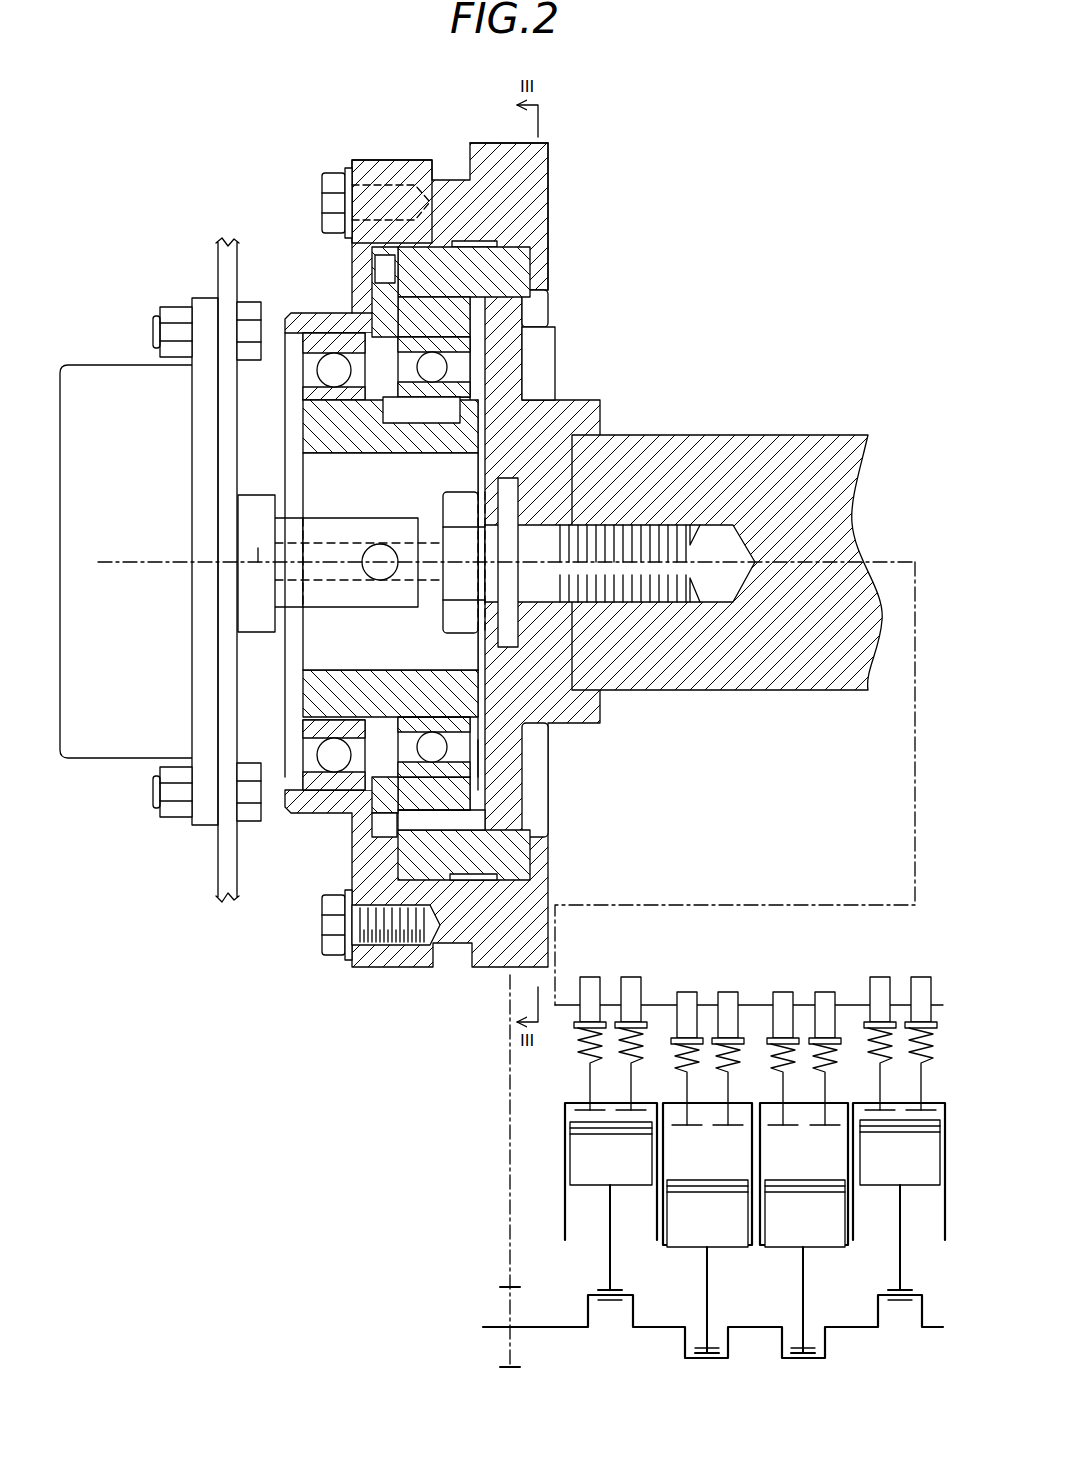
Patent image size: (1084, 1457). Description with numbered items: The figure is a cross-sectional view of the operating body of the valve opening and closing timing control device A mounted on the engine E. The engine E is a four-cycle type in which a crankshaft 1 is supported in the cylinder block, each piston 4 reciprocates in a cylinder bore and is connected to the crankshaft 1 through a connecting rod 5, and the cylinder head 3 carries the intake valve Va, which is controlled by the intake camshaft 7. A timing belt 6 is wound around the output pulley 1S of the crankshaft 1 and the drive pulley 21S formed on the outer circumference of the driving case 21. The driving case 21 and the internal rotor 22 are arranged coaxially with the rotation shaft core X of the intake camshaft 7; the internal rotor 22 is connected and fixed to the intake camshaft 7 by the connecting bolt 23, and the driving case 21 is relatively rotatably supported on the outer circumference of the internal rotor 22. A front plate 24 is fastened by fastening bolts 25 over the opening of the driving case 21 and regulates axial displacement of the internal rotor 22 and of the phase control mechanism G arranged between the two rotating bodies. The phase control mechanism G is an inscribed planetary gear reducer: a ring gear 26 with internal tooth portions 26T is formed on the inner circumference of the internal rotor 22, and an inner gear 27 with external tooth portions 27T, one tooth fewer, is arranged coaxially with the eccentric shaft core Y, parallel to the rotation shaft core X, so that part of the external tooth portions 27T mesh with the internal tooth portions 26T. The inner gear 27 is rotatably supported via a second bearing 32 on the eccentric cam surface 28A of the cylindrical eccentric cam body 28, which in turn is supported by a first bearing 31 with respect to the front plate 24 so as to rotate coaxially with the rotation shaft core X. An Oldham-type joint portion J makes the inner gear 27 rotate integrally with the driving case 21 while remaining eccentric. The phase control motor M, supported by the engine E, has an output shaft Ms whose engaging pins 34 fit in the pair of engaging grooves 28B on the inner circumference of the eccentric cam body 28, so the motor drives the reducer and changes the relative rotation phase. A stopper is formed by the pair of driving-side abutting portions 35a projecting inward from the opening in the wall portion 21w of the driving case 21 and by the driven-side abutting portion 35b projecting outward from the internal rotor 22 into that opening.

The crankshaft 1 is at (542, 1320).
The output pulley 1S is at (508, 1308).
The cylinder head 3 is at (677, 1100).
The piston 4 is at (567, 1160).
The connecting rod 5 is at (610, 1268).
The timing belt 6 is at (508, 1127).
The intake camshaft 7 is at (783, 435).
The driving case 21 is at (478, 531).
The drive pulley 21S is at (510, 143).
The wall portion 21w is at (548, 197).
The internal rotor 22 is at (478, 246).
The connecting bolt 23 is at (697, 583).
The front plate 24 is at (362, 158).
The fastening bolts 25 is at (320, 203).
The ring gear 26 is at (532, 563).
The internal tooth portions 26T is at (453, 828).
The inner gear 27 is at (493, 535).
The external tooth portions 27T is at (467, 813).
The eccentric cam body 28 is at (312, 555).
The eccentric cam surface 28A is at (418, 717).
The engaging grooves 28B is at (348, 570).
The first bearing 31 is at (313, 372).
The second bearing 32 is at (447, 368).
The engaging pins 34 is at (375, 550).
The driving-side abutting portions 35a is at (548, 313).
The driven-side abutting portion 35b is at (555, 352).
The valve opening and closing timing control device A is at (283, 157).
The engine E is at (815, 195).
The phase control mechanism G is at (472, 767).
The joint portion J is at (377, 857).
The phase control motor M is at (108, 365).
The output shaft Ms is at (385, 515).
The intake valve Va is at (620, 1108).
The rotation shaft core X is at (496, 565).
The eccentric shaft core Y is at (263, 557).